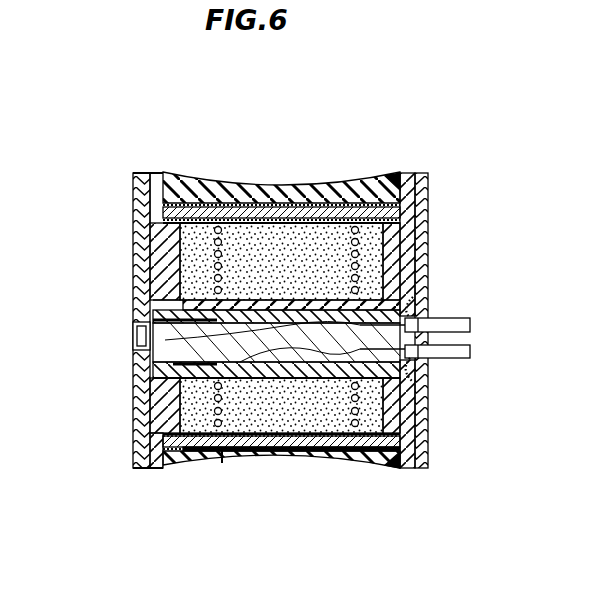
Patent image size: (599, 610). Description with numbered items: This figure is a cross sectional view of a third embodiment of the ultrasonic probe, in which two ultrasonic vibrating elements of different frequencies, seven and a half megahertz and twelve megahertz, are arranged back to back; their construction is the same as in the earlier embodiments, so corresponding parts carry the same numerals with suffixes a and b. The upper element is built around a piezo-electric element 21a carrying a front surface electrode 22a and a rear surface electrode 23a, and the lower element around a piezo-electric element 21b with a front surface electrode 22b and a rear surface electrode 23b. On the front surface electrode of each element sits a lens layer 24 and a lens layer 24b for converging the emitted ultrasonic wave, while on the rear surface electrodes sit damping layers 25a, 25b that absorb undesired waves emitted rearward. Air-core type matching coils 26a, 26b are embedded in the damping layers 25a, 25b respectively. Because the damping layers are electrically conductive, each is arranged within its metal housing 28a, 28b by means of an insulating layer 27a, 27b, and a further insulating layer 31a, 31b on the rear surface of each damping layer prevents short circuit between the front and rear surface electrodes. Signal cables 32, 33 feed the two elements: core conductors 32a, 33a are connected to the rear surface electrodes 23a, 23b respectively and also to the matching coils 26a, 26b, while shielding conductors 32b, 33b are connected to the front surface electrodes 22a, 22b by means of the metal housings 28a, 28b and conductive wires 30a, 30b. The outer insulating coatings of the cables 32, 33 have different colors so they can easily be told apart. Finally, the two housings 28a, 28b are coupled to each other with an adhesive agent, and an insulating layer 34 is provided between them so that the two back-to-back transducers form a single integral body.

The piezo-electric element 21a is at (250, 216).
The piezo-electric element 21b is at (270, 443).
The front surface electrode 22a is at (333, 212).
The front surface electrode 22b is at (353, 447).
The rear surface electrode 23a is at (205, 182).
The rear surface electrode 23b is at (345, 452).
The lens layer 24 is at (365, 188).
The lens layer 24b is at (192, 453).
The damping layer 25a is at (297, 236).
The damping layer 25b is at (322, 438).
The air-core type matching coil 26a is at (180, 264).
The air-core type matching coil 26b is at (390, 416).
The insulating layer 27a is at (405, 226).
The insulating layer 27b is at (400, 442).
The metal housing 28a is at (148, 208).
The metal housing 28b is at (140, 417).
The conductive wire 30a is at (402, 178).
The conductive wire 30b is at (400, 466).
The insulating layer 31a is at (405, 256).
The insulating layer 31b is at (158, 378).
The signal cable 32 is at (462, 320).
The core conductor 32a is at (138, 333).
The shielding conductor 32b is at (418, 316).
The signal cable 33 is at (460, 352).
The core conductor 33a is at (240, 432).
The shielding conductor 33b is at (420, 359).
The insulating layer 34 is at (221, 453).